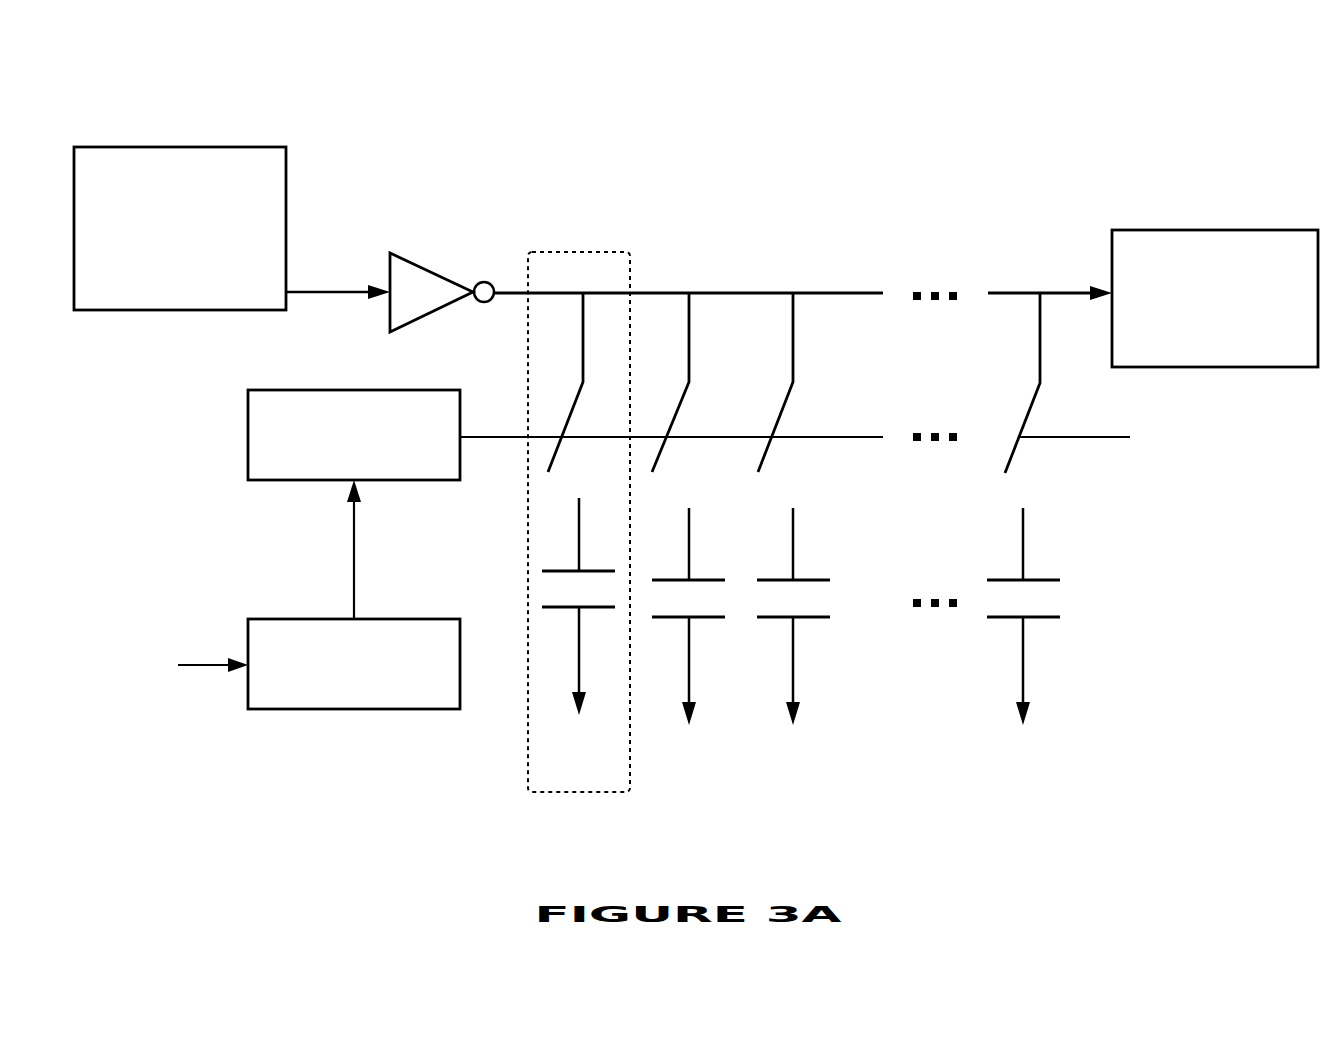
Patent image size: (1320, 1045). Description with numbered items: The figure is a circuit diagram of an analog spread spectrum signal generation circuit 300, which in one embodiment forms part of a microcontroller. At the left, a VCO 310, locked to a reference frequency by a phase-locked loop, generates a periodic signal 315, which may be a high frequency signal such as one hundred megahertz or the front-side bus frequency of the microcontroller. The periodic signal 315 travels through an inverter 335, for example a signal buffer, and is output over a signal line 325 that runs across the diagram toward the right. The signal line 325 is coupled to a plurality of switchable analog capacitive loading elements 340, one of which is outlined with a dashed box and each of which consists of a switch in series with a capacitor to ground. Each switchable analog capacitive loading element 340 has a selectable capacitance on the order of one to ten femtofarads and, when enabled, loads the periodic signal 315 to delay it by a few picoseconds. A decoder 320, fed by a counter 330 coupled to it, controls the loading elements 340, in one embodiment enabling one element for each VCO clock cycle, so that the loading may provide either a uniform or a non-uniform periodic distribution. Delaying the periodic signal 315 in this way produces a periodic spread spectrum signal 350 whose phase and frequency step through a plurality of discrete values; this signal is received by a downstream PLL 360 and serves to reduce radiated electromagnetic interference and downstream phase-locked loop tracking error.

The analog spread spectrum signal generation circuit 300 is at (37, 35).
The VCO 310 is at (160, 297).
The periodic signal 315 is at (300, 280).
The decoder 320 is at (335, 462).
The signal line 325 is at (757, 281).
The counter 330 is at (335, 691).
The inverter 335 is at (407, 302).
The switchable analog capacitive loading element 340 is at (547, 779).
The periodic spread spectrum signal 350 is at (1068, 275).
The downstream PLL 360 is at (1237, 351).